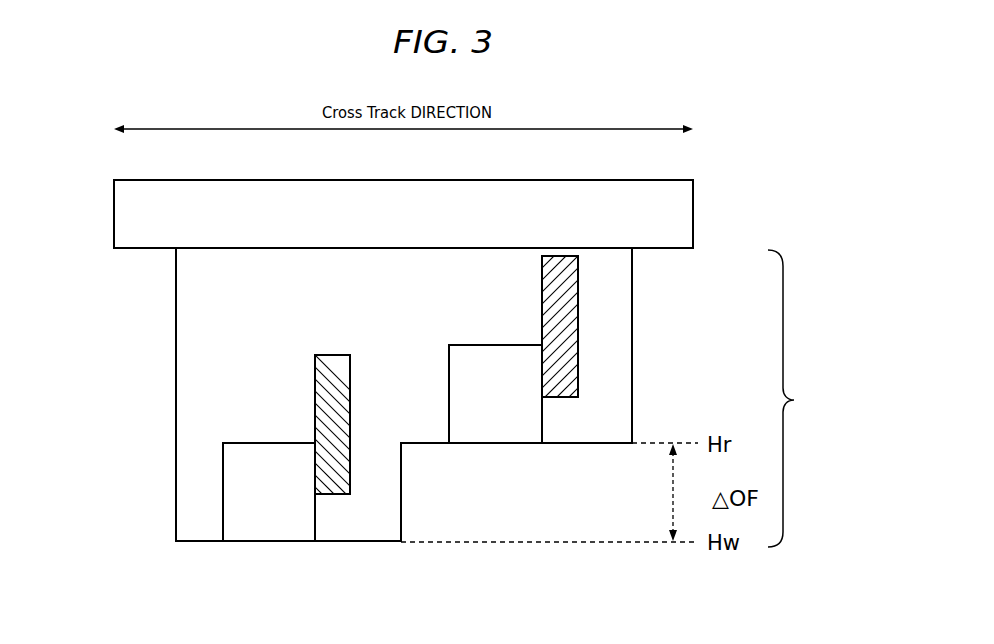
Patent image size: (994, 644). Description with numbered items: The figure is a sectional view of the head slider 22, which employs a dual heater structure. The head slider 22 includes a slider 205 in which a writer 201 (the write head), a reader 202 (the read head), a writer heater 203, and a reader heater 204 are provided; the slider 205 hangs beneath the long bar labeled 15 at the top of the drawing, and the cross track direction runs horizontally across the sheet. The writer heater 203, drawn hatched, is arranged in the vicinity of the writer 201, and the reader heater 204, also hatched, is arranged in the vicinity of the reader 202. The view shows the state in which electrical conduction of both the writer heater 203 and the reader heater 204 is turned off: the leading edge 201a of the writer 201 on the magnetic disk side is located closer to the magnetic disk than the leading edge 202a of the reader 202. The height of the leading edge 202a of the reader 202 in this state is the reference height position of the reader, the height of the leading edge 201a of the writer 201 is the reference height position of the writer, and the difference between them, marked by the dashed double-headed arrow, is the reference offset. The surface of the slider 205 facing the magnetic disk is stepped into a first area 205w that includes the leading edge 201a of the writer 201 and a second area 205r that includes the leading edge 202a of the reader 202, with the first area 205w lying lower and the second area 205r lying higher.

The magnetic recording medium 15 is at (134, 213).
The head slider 22 is at (801, 398).
The writer 201 is at (278, 454).
The leading edge of the writer 201a is at (272, 552).
The reader 202 is at (494, 364).
The leading edge of the reader 202a is at (503, 455).
The writer heater 203 is at (331, 376).
The reader heater 204 is at (565, 310).
The slider 205 is at (200, 279).
The first area 205w is at (199, 552).
The second area 205r is at (435, 455).